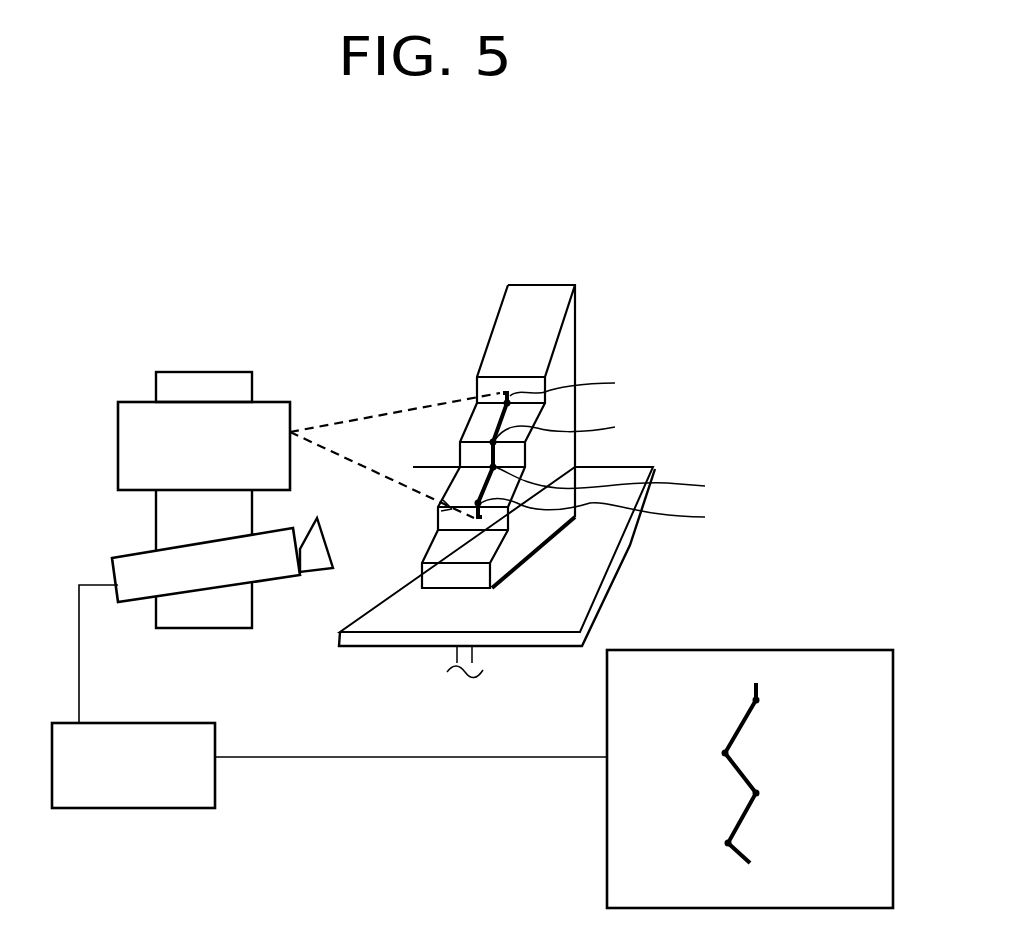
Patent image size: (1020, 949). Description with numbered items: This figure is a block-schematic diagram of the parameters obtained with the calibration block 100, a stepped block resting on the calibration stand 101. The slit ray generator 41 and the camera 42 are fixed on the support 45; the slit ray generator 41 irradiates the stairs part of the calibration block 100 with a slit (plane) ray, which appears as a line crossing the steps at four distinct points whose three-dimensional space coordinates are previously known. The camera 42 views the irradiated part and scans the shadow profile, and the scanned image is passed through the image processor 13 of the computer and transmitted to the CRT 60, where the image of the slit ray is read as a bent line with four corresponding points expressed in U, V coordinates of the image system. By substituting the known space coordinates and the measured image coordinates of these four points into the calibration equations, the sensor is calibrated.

The slit ray generator 41 is at (128, 402).
The support 45 is at (218, 373).
The camera 42 is at (273, 568).
The image processor 13 is at (158, 722).
The calibration block 100 is at (538, 303).
The calibration stand 101 is at (360, 648).
The CRT 60 is at (783, 650).